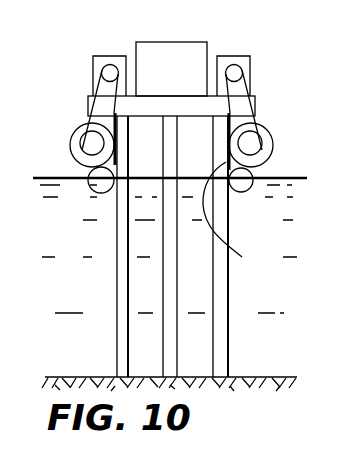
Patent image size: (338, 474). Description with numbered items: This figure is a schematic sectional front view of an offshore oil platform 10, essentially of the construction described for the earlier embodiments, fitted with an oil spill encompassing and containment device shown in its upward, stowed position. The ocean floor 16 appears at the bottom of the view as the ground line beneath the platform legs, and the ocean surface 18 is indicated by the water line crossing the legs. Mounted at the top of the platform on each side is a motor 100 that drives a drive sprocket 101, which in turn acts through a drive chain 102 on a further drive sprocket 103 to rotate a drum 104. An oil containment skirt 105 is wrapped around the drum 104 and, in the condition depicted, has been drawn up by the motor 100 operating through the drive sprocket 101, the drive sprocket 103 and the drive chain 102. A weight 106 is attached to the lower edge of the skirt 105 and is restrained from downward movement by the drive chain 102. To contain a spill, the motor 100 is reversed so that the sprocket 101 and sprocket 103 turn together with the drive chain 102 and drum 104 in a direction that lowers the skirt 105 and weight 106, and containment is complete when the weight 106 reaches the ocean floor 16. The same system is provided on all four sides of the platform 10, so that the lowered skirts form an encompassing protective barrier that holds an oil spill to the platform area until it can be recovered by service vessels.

The oil platform 10 is at (178, 42).
The ocean floor 16 is at (257, 377).
The ocean surface 18 is at (148, 178).
The motor 100 is at (94, 58).
The drive sprocket 101 is at (110, 64).
The drive chain 102 is at (88, 98).
The drive sprocket 103 is at (262, 148).
The drum 104 is at (270, 129).
The oil containment skirt 105 is at (244, 217).
The weight 106 is at (242, 188).